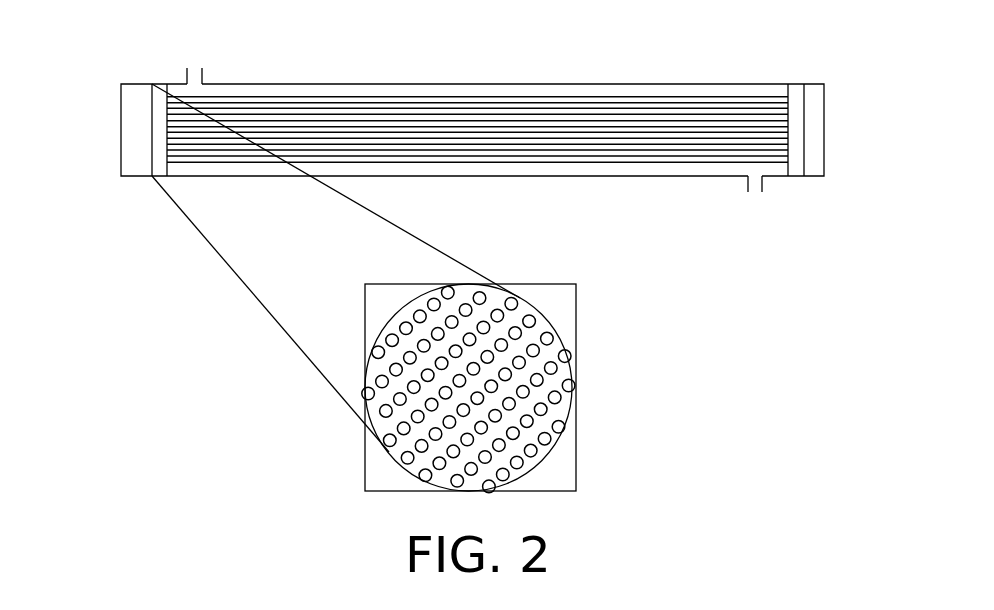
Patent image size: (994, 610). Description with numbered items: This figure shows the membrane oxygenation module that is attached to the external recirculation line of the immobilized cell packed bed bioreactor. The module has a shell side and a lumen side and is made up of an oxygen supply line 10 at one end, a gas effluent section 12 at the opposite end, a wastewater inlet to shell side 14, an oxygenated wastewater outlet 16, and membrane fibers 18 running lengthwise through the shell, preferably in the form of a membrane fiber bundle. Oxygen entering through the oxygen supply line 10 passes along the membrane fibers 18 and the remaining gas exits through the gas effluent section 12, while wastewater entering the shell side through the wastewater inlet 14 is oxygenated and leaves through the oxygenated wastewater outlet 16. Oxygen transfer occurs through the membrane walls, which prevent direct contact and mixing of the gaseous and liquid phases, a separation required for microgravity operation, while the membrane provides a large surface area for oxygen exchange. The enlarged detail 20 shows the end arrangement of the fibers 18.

The oxygen supply line 10 is at (121, 127).
The gas effluent section 12 is at (824, 125).
The wastewater inlet to shell side 14 is at (754, 194).
The oxygenated wastewater outlet 16 is at (194, 22).
The membrane fibers 18 is at (440, 118).
The tube sheet detail (tube holes) 20 is at (566, 412).